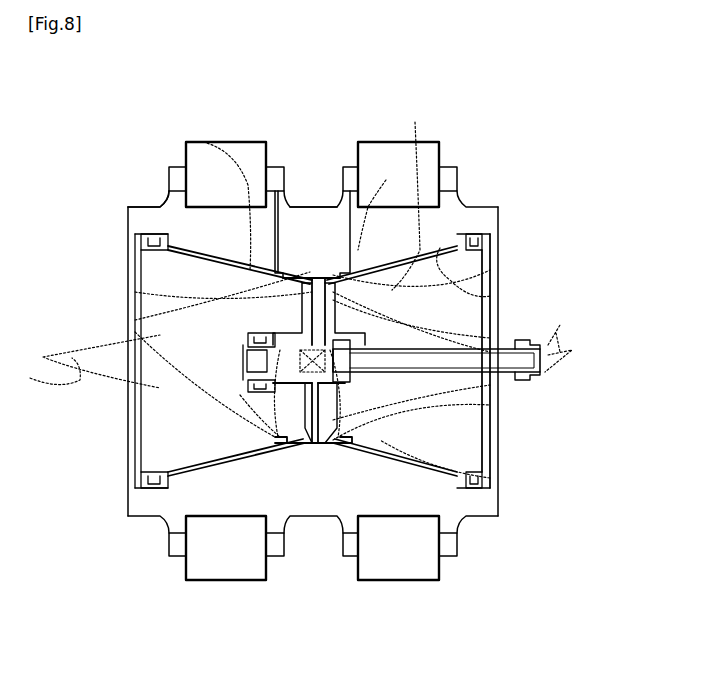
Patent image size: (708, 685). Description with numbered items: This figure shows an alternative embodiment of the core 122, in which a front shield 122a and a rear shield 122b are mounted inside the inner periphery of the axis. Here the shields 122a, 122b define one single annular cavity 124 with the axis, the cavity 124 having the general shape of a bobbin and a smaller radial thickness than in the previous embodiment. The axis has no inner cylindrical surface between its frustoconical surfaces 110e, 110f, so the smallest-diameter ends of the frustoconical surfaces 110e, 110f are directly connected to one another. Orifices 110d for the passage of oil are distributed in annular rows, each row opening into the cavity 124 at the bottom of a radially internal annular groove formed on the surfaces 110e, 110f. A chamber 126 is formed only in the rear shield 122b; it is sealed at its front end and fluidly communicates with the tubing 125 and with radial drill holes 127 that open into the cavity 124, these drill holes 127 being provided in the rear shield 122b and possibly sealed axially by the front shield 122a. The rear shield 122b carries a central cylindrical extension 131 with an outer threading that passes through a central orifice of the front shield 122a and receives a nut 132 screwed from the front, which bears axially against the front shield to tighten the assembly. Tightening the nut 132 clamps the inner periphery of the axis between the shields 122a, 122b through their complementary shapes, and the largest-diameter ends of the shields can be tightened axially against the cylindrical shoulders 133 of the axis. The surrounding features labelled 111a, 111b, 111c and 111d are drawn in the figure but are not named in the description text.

The coil block 111a is at (203, 142).
The mounting tab 111b is at (170, 172).
The housing shoulder 111c is at (166, 206).
The mounting tab 111d is at (458, 178).
The frustoconical surface 110e is at (240, 152).
The orifices for the passage of oil 110d is at (335, 270).
The frustoconical surface 110f is at (445, 300).
The annular cavity 124 is at (396, 196).
The core 122 is at (472, 456).
The front shield 122a is at (272, 380).
The rear shield 122b is at (440, 325).
The tubing 125 is at (372, 368).
The chamber 126 is at (372, 390).
The radial drill holes 127 is at (312, 290).
The central cylindrical extension 131 is at (270, 395).
The nut 132 is at (262, 340).
The cylindrical shoulders 133 is at (165, 485).